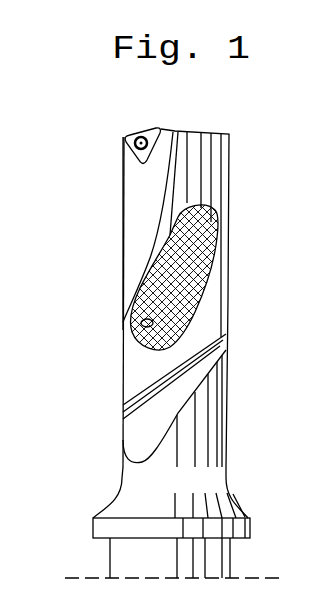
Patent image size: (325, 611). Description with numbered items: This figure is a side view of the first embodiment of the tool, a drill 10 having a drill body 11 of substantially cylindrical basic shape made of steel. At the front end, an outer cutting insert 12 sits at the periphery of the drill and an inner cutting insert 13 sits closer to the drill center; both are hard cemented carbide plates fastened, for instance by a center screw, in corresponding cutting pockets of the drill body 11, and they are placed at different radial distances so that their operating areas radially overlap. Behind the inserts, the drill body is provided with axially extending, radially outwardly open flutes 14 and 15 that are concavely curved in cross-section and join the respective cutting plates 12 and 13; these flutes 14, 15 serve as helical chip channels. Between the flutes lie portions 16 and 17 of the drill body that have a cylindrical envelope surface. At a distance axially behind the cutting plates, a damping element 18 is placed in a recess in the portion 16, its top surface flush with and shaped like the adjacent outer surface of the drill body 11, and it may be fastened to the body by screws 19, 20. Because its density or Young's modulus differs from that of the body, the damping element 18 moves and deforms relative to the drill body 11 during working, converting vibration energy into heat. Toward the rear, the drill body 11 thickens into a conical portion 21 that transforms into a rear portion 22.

The drill 10 is at (118, 376).
The drill body 11 is at (228, 167).
The outer cutting insert 12 is at (130, 138).
The inner cutting insert 13 is at (188, 129).
The flute 14 is at (143, 207).
The flute 15 is at (217, 318).
The portion of the drill body 16 is at (213, 187).
The portion of the drill body 17 is at (124, 173).
The damping element 18 is at (133, 282).
The screw 19 is at (213, 226).
The screw 20 is at (146, 326).
The conical portion 21 is at (110, 501).
The rear portion 22 is at (93, 527).